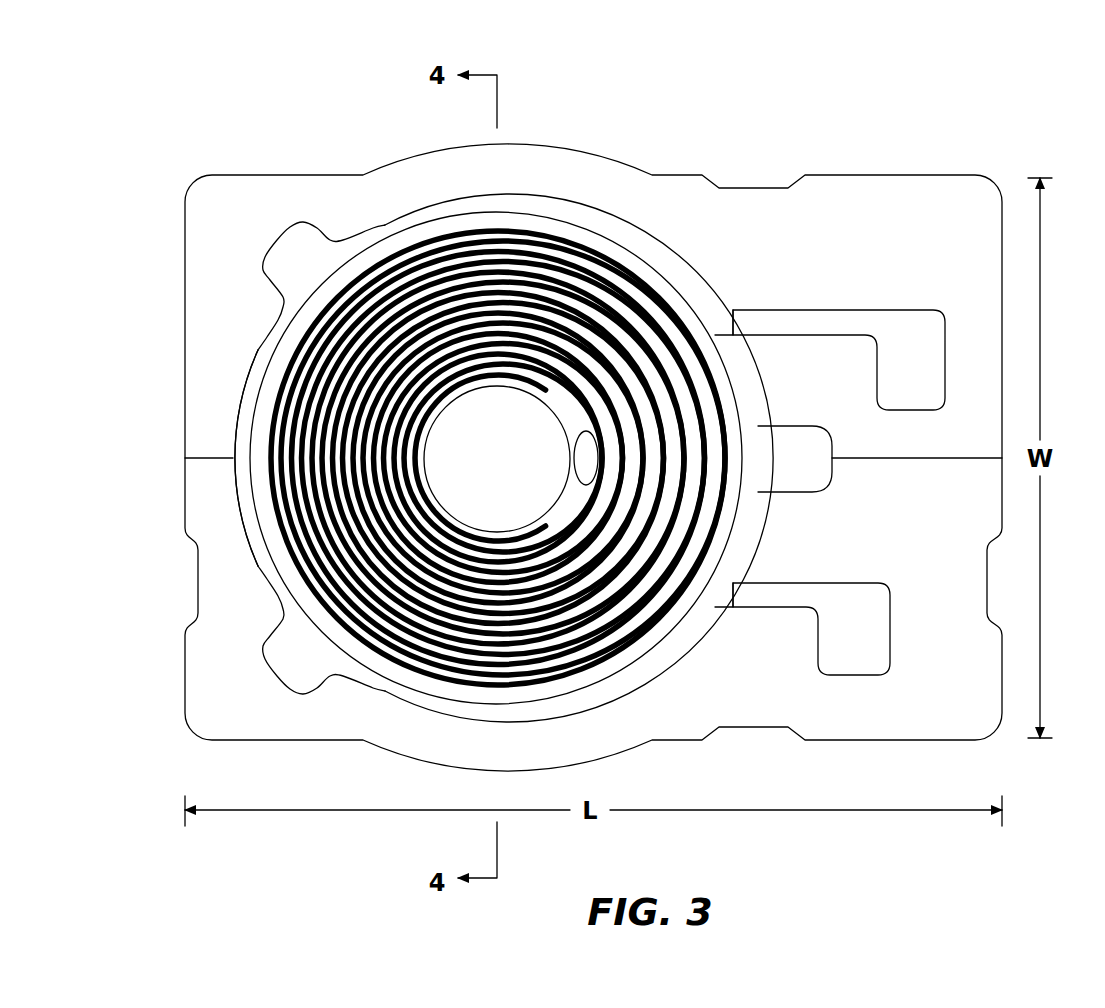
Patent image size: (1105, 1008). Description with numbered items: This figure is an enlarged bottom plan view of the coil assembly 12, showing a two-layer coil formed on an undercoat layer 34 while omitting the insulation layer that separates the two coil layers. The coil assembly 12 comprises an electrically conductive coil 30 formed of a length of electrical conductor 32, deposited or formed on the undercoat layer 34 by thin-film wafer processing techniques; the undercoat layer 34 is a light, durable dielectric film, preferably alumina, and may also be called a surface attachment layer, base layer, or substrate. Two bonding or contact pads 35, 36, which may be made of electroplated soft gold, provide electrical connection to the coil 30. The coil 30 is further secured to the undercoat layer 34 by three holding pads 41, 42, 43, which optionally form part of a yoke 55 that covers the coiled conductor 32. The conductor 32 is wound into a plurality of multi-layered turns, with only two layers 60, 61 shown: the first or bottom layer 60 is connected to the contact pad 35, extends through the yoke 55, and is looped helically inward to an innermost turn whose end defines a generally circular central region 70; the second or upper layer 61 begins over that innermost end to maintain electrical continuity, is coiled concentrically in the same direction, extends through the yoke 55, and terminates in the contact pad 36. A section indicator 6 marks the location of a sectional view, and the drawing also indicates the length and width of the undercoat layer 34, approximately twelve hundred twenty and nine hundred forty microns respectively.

The coil assembly 12 is at (343, 118).
The electrically conductive coil 30 is at (642, 212).
The electrical conductor 32 is at (310, 573).
The undercoat layer 34 is at (894, 237).
The bonding pad 35 is at (942, 323).
The bonding pad 36 is at (893, 652).
The holding pad 41 is at (292, 248).
The holding pad 42 is at (292, 658).
The holding pad 43 is at (801, 480).
The yoke 55 is at (260, 333).
The first layer 60 is at (712, 322).
The second layer 61 is at (722, 596).
The central region 70 is at (484, 473).
The section view indicator 6 is at (572, 457).